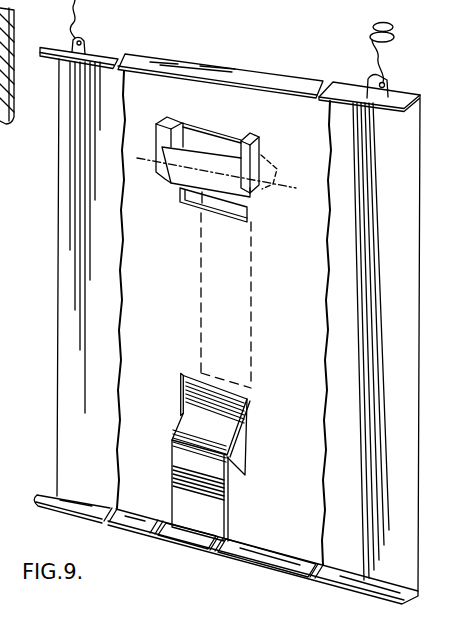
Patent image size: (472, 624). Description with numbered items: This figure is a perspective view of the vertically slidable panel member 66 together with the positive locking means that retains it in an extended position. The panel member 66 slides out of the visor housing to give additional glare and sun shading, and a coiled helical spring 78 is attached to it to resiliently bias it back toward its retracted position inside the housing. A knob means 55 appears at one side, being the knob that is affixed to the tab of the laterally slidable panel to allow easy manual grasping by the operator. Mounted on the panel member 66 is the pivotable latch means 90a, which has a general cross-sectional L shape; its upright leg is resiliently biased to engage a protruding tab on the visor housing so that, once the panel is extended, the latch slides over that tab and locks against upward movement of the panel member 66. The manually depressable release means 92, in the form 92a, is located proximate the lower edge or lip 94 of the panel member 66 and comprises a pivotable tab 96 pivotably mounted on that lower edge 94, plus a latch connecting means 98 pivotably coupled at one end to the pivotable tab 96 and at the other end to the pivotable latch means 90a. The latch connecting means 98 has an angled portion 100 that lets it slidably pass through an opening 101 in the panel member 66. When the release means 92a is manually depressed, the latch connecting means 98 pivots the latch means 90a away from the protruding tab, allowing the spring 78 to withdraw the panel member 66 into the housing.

The knob means 55 is at (12, 85).
The vertically slidable panel member 66 is at (58, 258).
The coiled helical spring 78 is at (370, 31).
The pivotable latch means 90a is at (212, 162).
The manually depressable release means 92 is at (220, 49).
The manually depressable release means 92a is at (172, 547).
The lower edge 94 is at (256, 558).
The pivotable tab 96 is at (340, 56).
The latch connecting means 98 is at (228, 494).
The angled portion 100 is at (240, 430).
The opening 101 is at (178, 388).